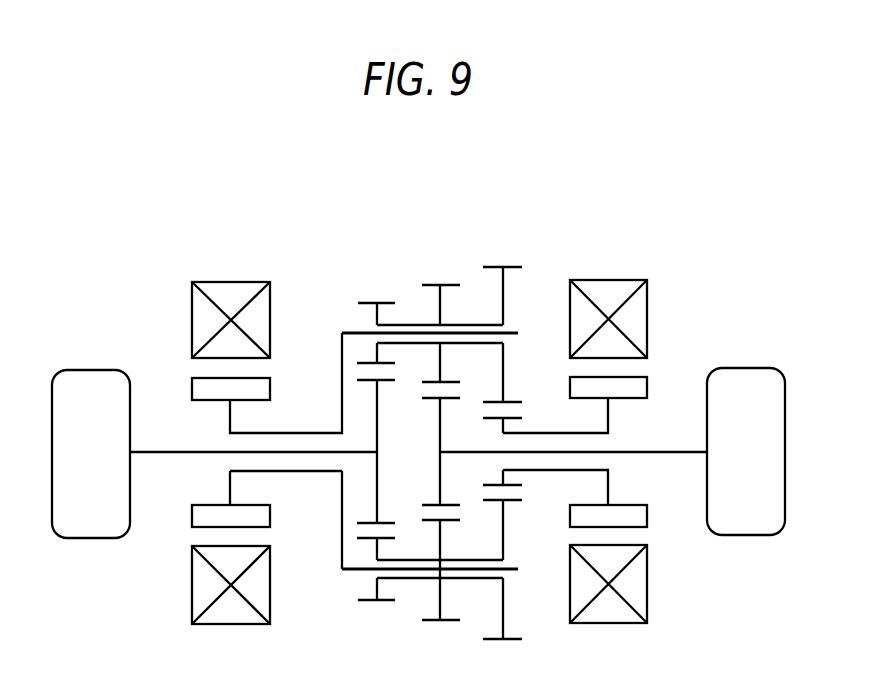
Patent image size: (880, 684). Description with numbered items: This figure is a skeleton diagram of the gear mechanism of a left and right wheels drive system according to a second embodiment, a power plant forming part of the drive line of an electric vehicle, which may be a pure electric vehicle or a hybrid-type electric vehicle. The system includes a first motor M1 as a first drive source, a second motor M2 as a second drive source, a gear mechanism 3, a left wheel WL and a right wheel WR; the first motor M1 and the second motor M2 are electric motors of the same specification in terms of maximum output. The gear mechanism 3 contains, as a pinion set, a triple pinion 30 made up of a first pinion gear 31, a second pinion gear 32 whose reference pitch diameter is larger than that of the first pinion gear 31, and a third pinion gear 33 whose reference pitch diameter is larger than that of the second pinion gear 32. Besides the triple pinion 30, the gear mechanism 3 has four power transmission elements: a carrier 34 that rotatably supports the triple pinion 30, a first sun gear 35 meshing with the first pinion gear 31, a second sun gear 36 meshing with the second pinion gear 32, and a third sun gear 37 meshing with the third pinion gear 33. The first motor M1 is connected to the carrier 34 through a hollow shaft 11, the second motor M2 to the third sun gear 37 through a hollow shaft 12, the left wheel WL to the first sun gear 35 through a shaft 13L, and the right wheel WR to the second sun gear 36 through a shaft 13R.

The gear mechanism 3 is at (419, 408).
The triple pinion 30 is at (411, 431).
The first pinion gear 31 is at (378, 315).
The second pinion gear 32 is at (442, 305).
The third pinion gear 33 is at (505, 293).
The carrier 34 is at (362, 331).
The first sun gear 35 is at (377, 490).
The second sun gear 36 is at (440, 485).
The third sun gear 37 is at (512, 481).
The hollow shaft 11 is at (302, 433).
The hollow shaft 12 is at (541, 432).
The shaft 13L is at (157, 455).
The shaft 13R is at (681, 455).
The first motor M1 is at (231, 437).
The second motor M2 is at (608, 436).
The left wheel WL is at (92, 370).
The right wheel WR is at (745, 368).